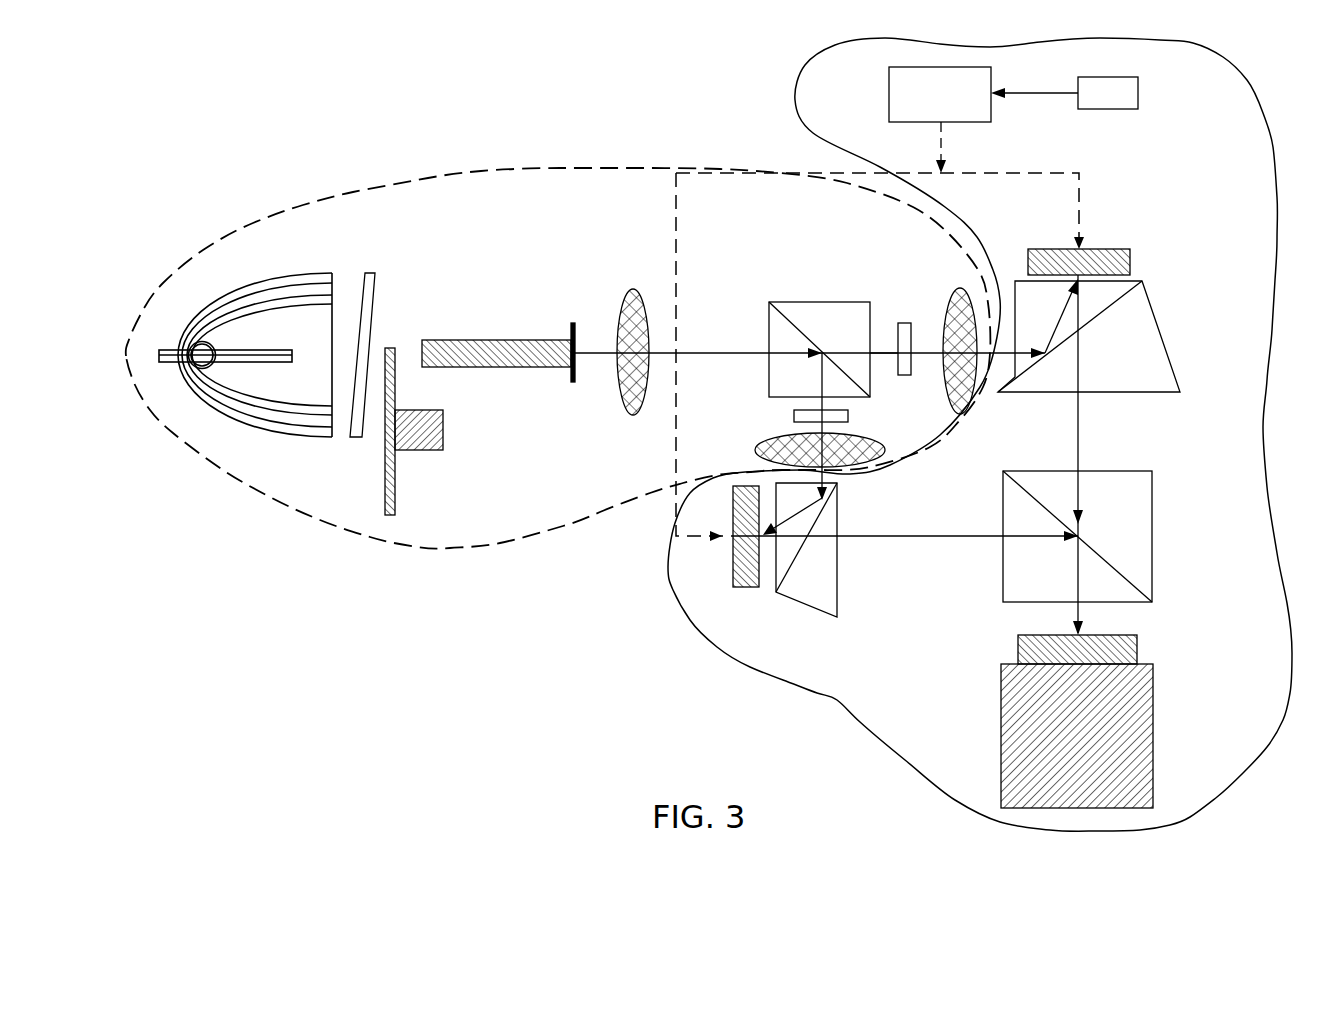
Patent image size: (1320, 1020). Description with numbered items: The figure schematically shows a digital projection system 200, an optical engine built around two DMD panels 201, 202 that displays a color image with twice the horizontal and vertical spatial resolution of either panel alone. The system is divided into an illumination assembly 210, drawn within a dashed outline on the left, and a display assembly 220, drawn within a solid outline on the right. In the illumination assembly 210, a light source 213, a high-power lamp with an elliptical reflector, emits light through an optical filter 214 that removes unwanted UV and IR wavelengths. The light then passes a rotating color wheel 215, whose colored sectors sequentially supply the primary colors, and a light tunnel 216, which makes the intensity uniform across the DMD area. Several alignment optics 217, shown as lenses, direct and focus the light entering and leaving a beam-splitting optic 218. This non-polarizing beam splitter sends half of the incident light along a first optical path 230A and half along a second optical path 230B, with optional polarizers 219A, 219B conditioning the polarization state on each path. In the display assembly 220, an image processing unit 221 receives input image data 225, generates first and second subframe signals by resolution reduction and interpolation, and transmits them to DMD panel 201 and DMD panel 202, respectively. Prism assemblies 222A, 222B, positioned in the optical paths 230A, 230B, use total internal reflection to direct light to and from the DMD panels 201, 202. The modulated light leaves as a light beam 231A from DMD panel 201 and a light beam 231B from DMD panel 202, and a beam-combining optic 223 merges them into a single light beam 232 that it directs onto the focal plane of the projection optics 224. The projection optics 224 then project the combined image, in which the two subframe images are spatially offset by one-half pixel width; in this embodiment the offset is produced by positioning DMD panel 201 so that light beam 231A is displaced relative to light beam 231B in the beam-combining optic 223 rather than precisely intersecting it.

The digital projection system 200 is at (490, 82).
The illumination assembly 210 is at (432, 548).
The display assembly 220 is at (770, 667).
The light source 213 is at (248, 288).
The optical filter 214 is at (372, 275).
The color wheel 215 is at (396, 470).
The light tunnel 216 is at (466, 368).
The alignment optics 217 is at (620, 396).
The beam-splitting optic 218 is at (800, 302).
The polarizer 219A is at (794, 416).
The polarizer 219B is at (906, 322).
The first optical path 230A is at (828, 400).
The second optical path 230B is at (883, 352).
The DMD panel 201 is at (748, 588).
The prism assembly 222A is at (813, 612).
The light beam 231A is at (937, 538).
The image processing unit 221 is at (889, 98).
The input image data 225 is at (1113, 110).
The DMD panel 202 is at (1130, 260).
The prism assembly 222B is at (1170, 357).
The light beam 231B is at (1080, 412).
The beam-combining optic 223 is at (1152, 527).
The single light beam 232 is at (1080, 590).
The projection optics 224 is at (1153, 710).